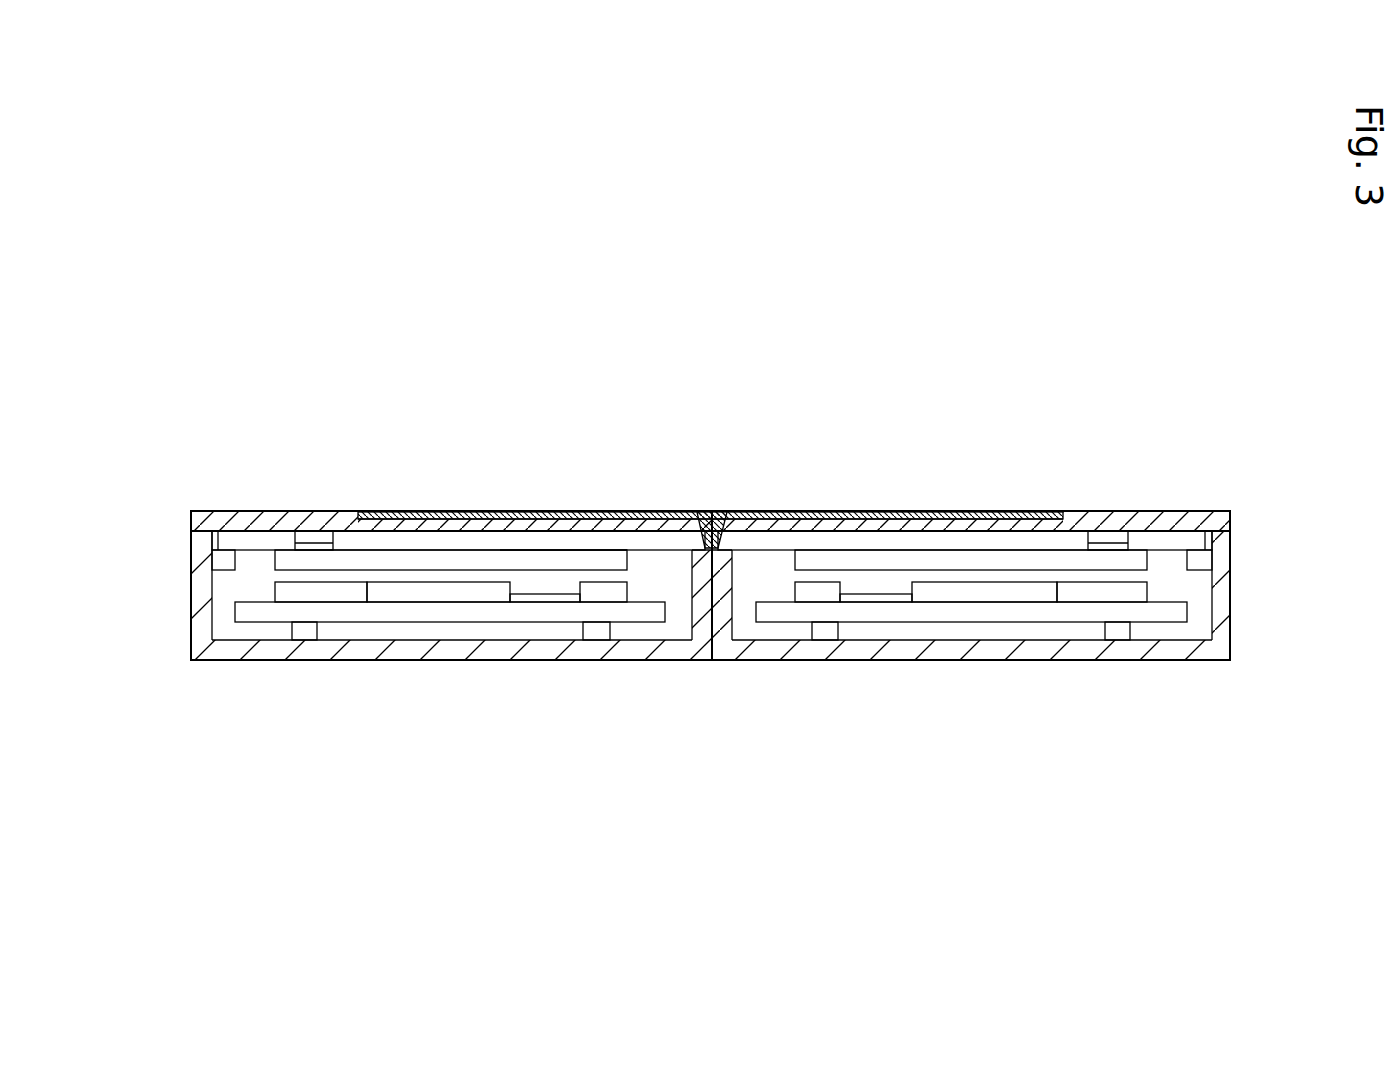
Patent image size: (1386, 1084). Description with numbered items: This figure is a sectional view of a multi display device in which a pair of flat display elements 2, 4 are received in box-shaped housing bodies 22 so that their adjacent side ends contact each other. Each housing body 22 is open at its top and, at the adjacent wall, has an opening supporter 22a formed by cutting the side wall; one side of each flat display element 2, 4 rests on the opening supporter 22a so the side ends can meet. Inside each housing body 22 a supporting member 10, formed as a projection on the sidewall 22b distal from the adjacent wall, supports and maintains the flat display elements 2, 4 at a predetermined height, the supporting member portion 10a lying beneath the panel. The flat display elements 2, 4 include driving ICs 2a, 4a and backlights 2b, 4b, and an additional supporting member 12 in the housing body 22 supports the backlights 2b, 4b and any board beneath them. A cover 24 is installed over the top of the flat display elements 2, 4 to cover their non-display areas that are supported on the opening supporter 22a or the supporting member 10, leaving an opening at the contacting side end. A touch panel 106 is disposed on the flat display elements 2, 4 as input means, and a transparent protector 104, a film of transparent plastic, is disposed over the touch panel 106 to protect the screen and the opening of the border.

The flat display element 2 is at (487, 545).
The driving IC 2a is at (210, 542).
The backlight 2b is at (270, 613).
The flat display element 4 is at (908, 542).
The driving IC 4a is at (1163, 542).
The backlight 4b is at (1175, 612).
The supporting member 10 is at (212, 565).
The supporting member portion 10a is at (593, 558).
The additional supporting member 12 is at (307, 632).
The housing body 22 is at (422, 652).
The opening supporter 22a is at (703, 548).
The sidewall 22b is at (222, 598).
The cover 24 is at (247, 512).
The transparent protector 104 is at (413, 512).
The touch panel 106 is at (538, 512).